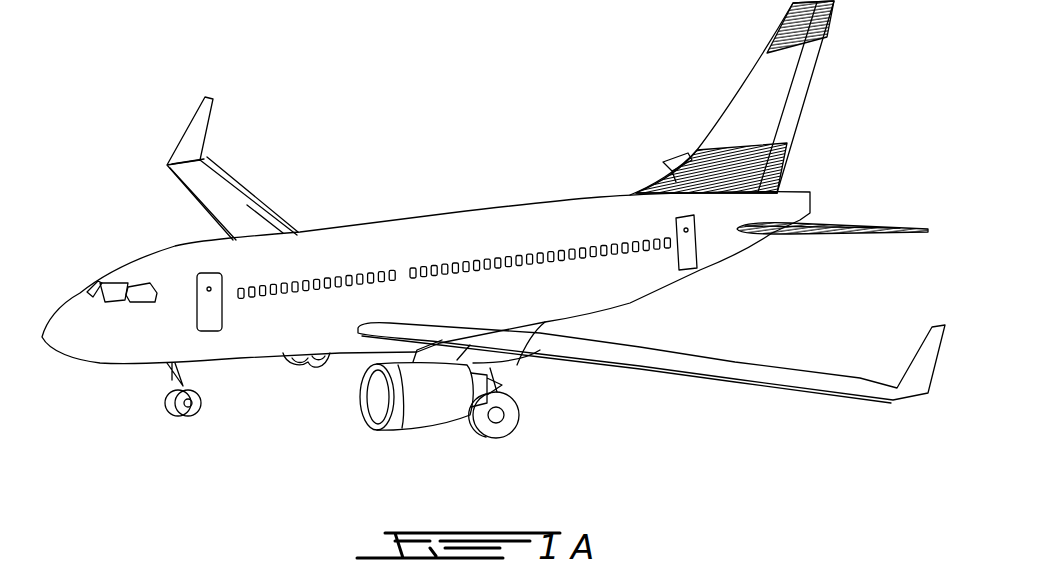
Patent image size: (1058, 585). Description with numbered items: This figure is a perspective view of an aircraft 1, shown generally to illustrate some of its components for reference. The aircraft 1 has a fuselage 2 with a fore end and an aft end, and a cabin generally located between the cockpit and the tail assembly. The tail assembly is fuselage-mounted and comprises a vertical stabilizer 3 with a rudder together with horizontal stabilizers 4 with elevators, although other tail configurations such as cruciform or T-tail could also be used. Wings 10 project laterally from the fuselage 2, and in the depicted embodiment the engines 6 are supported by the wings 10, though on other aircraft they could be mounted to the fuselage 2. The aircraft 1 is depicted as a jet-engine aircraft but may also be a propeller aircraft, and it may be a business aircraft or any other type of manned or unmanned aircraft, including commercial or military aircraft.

The aircraft 1 is at (407, 172).
The fuselage 2 is at (249, 338).
The vertical stabilizer 3 is at (753, 95).
The horizontal stabilizers 4 is at (663, 160).
The engines 6 is at (433, 404).
The wings 10 is at (219, 204).